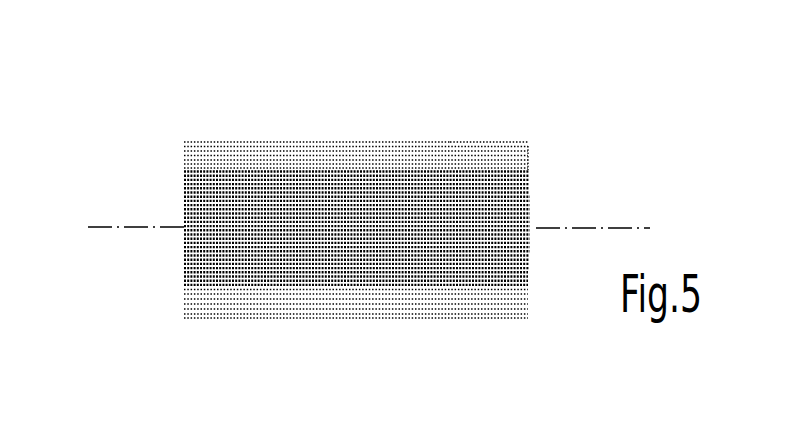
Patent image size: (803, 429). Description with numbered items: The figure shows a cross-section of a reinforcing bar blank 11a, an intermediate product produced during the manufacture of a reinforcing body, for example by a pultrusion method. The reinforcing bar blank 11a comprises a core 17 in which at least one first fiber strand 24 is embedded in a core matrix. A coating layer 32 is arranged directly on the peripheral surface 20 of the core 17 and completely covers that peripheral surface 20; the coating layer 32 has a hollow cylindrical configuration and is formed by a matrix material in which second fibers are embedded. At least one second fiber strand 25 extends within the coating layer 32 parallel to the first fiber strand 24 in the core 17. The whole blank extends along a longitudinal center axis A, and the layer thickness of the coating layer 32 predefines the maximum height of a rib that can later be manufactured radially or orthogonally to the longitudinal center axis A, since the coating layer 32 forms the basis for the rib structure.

The core 17 is at (541, 217).
The second fiber strand 25 is at (270, 155).
The peripheral surface 20 is at (403, 168).
The first fiber strand 24 is at (443, 260).
The coating layer 32 is at (572, 152).
The reinforcing bar blank 11a is at (593, 98).
The longitudinal center axis A is at (105, 228).